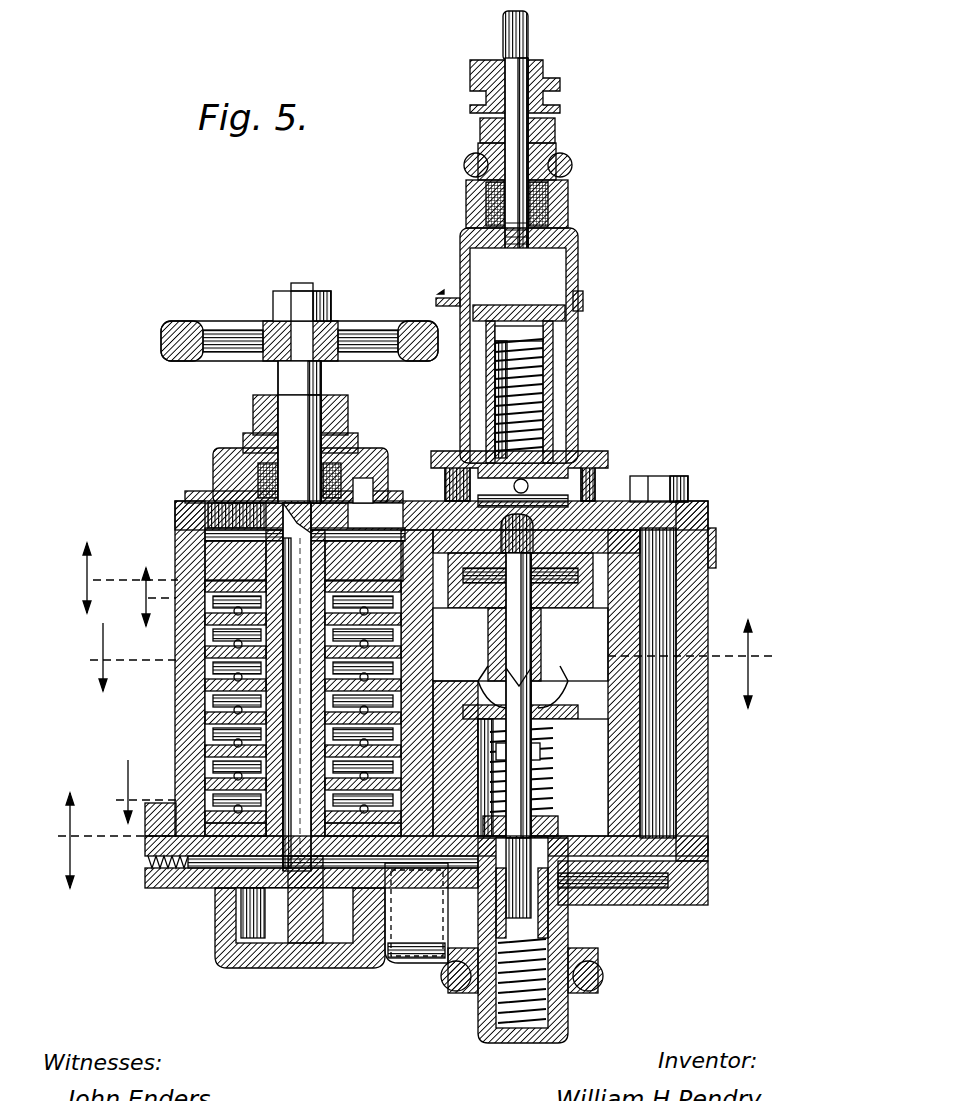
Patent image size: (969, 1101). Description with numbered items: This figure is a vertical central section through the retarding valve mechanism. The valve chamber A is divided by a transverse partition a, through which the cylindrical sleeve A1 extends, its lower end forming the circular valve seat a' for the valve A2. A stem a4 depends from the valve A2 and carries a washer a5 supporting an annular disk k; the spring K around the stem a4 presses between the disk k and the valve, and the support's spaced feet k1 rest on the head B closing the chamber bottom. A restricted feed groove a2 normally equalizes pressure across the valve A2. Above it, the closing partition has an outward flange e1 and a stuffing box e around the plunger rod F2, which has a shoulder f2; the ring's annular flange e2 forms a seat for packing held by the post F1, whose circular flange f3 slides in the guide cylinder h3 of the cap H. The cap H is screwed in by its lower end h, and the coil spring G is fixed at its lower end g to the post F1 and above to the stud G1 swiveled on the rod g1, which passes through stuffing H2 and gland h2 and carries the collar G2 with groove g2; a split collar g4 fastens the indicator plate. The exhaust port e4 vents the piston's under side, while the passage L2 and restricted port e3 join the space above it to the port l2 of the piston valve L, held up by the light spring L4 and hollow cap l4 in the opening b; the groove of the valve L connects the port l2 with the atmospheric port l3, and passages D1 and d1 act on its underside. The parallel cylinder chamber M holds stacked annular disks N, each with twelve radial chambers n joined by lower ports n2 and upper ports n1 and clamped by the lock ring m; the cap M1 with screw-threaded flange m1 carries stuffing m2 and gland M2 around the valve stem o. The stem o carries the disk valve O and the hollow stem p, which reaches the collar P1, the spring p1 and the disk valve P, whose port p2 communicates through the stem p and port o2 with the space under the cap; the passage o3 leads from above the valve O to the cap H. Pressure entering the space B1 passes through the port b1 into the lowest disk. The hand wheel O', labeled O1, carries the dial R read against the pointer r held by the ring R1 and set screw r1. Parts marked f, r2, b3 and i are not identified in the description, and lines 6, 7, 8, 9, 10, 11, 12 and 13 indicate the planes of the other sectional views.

The collar G2 is at (538, 66).
The groove g2 is at (548, 92).
The gland h2 is at (458, 155).
The stuffing H2 is at (565, 166).
The split collar g4 is at (562, 197).
The coil spring G is at (540, 422).
The cap H is at (570, 382).
The stud G1 is at (557, 305).
The ring R1 is at (576, 295).
The rod g1 is at (520, 272).
The spaced feet k1 is at (548, 330).
The lower end of coil spring g is at (535, 442).
The pointer r is at (428, 294).
The set screw r1 is at (432, 286).
The guide cylinder h3 is at (580, 475).
The lower screw-threaded end of cap h is at (592, 480).
The restricted port e3 is at (645, 478).
The post F1 is at (638, 652).
The plate f is at (492, 478).
The circular flange f3 is at (520, 480).
The hand wheel O1 is at (197, 322).
The dial R is at (425, 316).
The disk valve O is at (299, 432).
The gland M2 is at (250, 400).
The stuffing m2 is at (240, 436).
The cap M1 is at (212, 456).
The screw-threaded flange m1 is at (196, 486).
The cylinder chamber M is at (170, 700).
The hand wheel O' is at (269, 533).
The lock ring m is at (185, 524).
The annular disks N is at (195, 565).
The radial chambers n is at (205, 622).
The lower ports n2 is at (205, 748).
The upper ports n1 is at (205, 776).
The hollow stem p is at (297, 687).
The port r2 is at (361, 551).
The port o2 is at (365, 487).
The valve stem o is at (330, 522).
The passage o3 is at (420, 500).
The stuffing box e is at (520, 580).
The annular flange e2 is at (530, 560).
The plunger rod F2 is at (518, 644).
The exhaust port e4 is at (560, 600).
The shoulder f2 is at (546, 663).
The cylindrical sleeve A1 is at (578, 665).
The outwardly projecting flange e1 is at (612, 626).
The valve chamber A is at (602, 748).
The transverse partition a is at (546, 758).
The circular valve seat a' is at (697, 697).
The valve A2 is at (600, 742).
The restricted feed groove a2 is at (470, 738).
The spring K is at (548, 776).
The stem a4 is at (535, 760).
The annular disk k is at (482, 770).
The washer a5 is at (550, 815).
The passage L2 is at (672, 790).
The section line 7 is at (690, 664).
The section line 9 is at (126, 565).
The section line 8 is at (148, 597).
The section line 10 is at (88, 651).
The section line 6 is at (124, 661).
The section line 12 is at (116, 827).
The section line 13 is at (70, 901).
The section line 11 is at (136, 791).
The disk valve P is at (168, 878).
The port p2 is at (140, 850).
The spring p1 is at (235, 872).
The collar P1 is at (255, 945).
The space B1 is at (330, 930).
The passage D1 is at (385, 958).
The port b1 is at (415, 897).
The part b3 is at (415, 927).
The atmospheric port l3 is at (470, 905).
The port l2 is at (490, 892).
The part i is at (570, 853).
The piston valve L is at (560, 912).
The hollow cap l4 is at (560, 1015).
The light spring L4 is at (590, 962).
The screw-threaded opening b is at (595, 975).
The restricted passage d1 is at (447, 984).
The head B is at (680, 900).